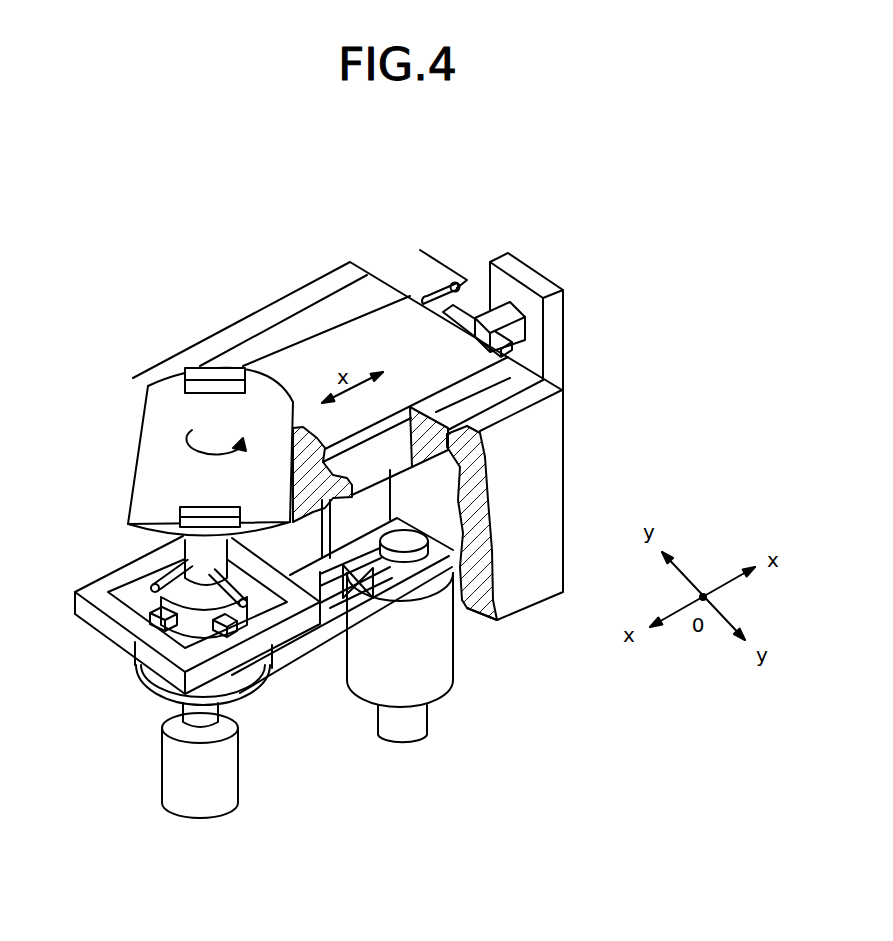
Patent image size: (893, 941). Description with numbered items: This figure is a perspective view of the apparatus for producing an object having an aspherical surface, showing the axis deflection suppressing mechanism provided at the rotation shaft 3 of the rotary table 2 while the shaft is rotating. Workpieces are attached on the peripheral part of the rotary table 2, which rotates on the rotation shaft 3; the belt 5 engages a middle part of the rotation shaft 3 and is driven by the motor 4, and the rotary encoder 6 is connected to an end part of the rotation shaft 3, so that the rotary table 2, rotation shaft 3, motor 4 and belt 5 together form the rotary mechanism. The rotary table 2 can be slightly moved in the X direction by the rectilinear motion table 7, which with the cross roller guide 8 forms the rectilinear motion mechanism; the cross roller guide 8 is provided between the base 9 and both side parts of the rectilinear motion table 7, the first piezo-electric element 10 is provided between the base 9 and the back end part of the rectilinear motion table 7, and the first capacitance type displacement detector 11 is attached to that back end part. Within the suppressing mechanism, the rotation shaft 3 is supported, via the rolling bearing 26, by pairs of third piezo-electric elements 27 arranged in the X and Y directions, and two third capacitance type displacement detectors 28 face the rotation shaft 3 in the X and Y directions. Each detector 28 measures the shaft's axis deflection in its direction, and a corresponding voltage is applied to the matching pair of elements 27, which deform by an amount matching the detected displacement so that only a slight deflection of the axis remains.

The rotary table 2 is at (260, 412).
The rotation shaft 3 is at (173, 543).
The motor 4 is at (453, 683).
The belt 5 is at (310, 653).
The rotary encoder 6 is at (198, 806).
The rectilinear motion table 7 is at (373, 337).
The cross roller guide 8 is at (519, 395).
The base 9 is at (540, 580).
The first piezo-electric element 10 is at (512, 315).
The first capacitance type displacement detector 11 is at (433, 283).
The rolling bearing 26 is at (140, 673).
The third piezo-electric elements 27 is at (148, 385).
The third capacitance type displacement detectors 28 is at (150, 583).